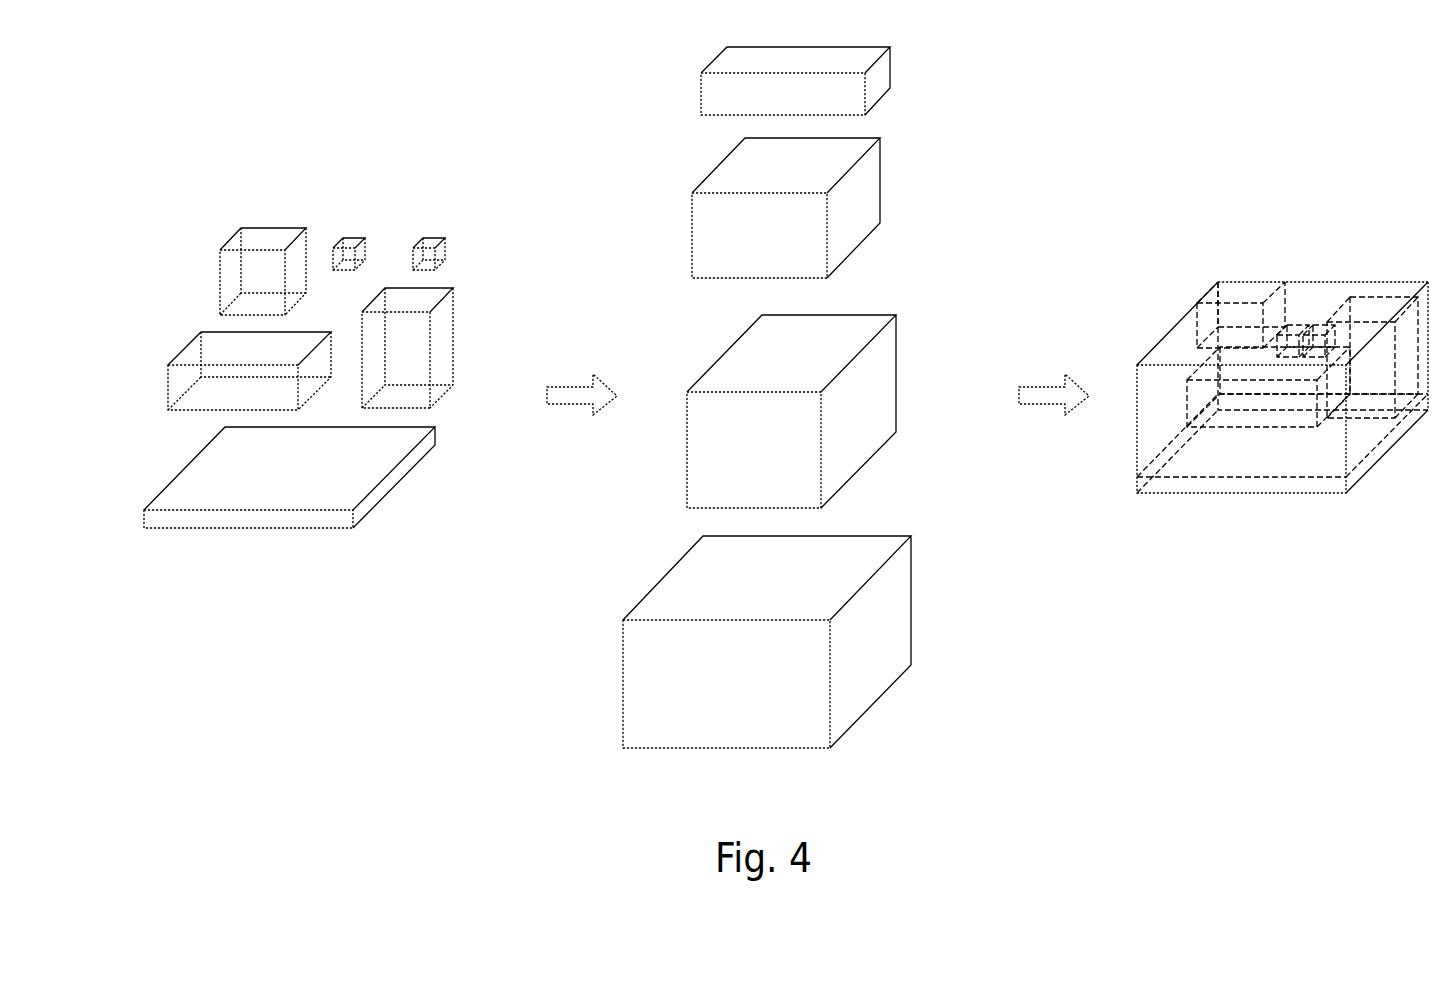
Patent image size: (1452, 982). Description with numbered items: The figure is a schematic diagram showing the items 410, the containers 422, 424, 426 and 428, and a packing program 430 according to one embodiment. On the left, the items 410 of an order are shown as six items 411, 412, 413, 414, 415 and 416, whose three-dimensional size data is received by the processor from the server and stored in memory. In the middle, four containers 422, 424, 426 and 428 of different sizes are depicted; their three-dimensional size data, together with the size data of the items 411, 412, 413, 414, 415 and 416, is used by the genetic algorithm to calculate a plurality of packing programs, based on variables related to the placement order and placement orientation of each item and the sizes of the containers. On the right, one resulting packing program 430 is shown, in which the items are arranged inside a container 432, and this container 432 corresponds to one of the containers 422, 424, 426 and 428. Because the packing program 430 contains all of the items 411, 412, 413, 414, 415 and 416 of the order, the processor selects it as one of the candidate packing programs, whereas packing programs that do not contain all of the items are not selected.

The items 410 is at (212, 192).
The item 411 is at (143, 517).
The item 412 is at (166, 389).
The item 413 is at (218, 284).
The item 414 is at (455, 315).
The item 415 is at (352, 238).
The item 416 is at (429, 238).
The container 422 is at (892, 69).
The container 424 is at (882, 180).
The container 426 is at (898, 350).
The container 428 is at (913, 600).
The packing program 430 is at (1196, 239).
The container 432 is at (1255, 495).